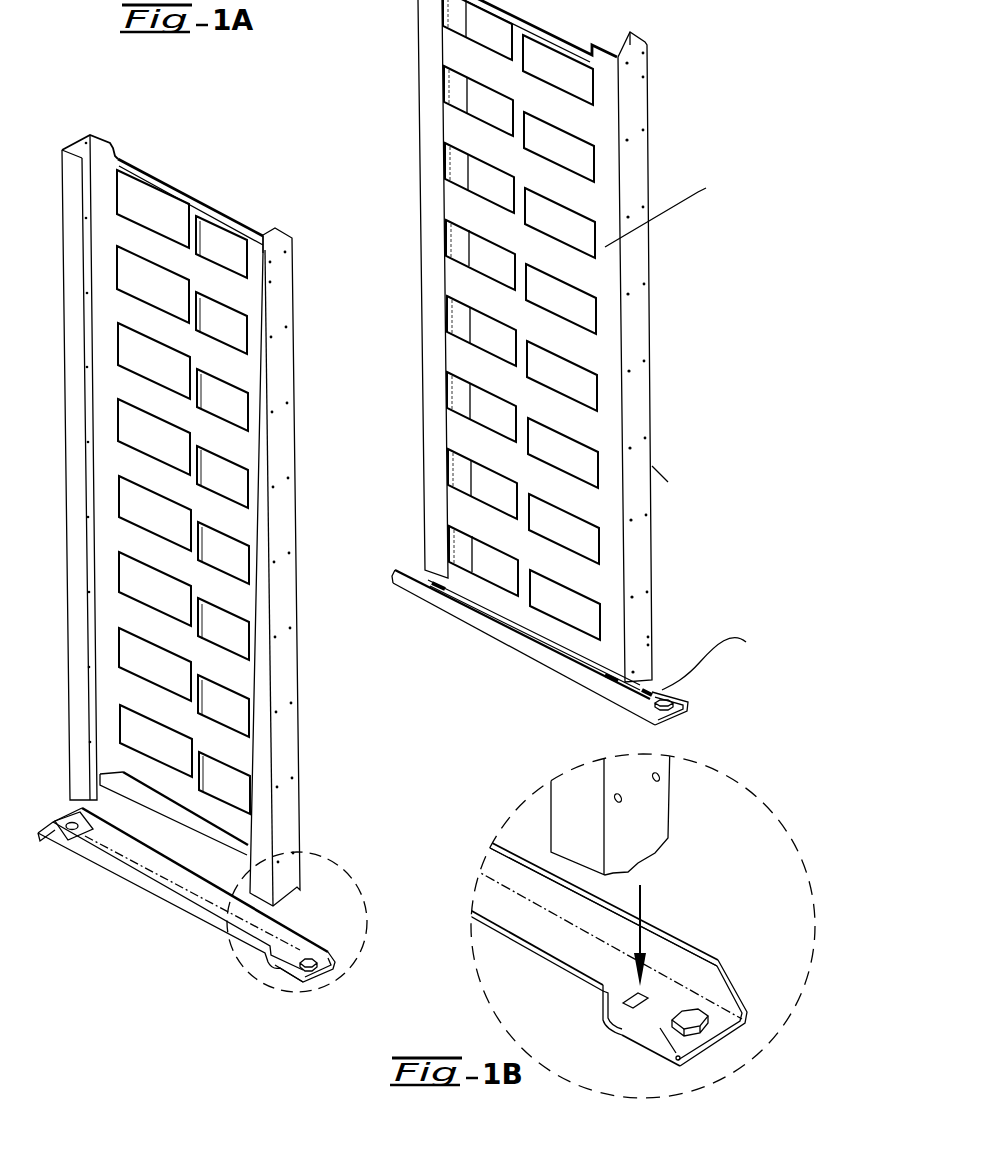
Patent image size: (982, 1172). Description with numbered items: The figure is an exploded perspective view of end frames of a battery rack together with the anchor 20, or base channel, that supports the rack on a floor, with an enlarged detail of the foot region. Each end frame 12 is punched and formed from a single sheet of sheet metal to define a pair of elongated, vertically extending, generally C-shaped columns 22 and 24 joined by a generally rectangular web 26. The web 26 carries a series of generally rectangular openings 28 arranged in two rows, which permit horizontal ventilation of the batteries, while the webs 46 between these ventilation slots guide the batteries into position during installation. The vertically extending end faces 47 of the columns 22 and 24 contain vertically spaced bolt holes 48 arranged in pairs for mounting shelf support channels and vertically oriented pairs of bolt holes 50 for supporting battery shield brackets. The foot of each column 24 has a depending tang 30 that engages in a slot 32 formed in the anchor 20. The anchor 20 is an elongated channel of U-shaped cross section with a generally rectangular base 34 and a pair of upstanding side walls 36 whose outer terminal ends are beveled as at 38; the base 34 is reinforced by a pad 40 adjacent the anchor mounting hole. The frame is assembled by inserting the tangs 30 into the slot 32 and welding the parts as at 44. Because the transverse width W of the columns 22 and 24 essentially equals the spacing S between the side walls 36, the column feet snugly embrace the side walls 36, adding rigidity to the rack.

In FIG. 1A, the end frame 12 is at (205, 182).
In FIG. 1A, the anchor 20 is at (125, 893).
In FIG. 1A, the column 22 is at (280, 368).
In FIG. 1A, the column 24 is at (637, 248).
In FIG. 1A, the web 26 is at (153, 253).
In FIG. 1A, the openings 28 is at (142, 204).
In FIG. 1B, the tang 30 is at (637, 873).
In FIG. 1B, the slot 32 is at (633, 997).
In FIG. 1B, the base 34 is at (498, 910).
In FIG. 1A, the side walls 36 is at (147, 853).
In FIG. 1B, the side walls 36 is at (678, 962).
In FIG. 1B, the bevel 38 is at (735, 988).
In FIG. 1A, the pad 40 is at (77, 828).
In FIG. 1B, the pad 40 is at (638, 1018).
In FIG. 1A, the weld 44 is at (437, 589).
In FIG. 1A, the webs 46 is at (195, 233).
In FIG. 1A, the end faces 47 is at (280, 443).
In FIG. 1A, the bolt holes 48 is at (290, 252).
In FIG. 1A, the bolt holes 50 is at (272, 286).
In FIG. 1A, the transverse width W is at (293, 918).
In FIG. 1A, the spacing S is at (258, 914).